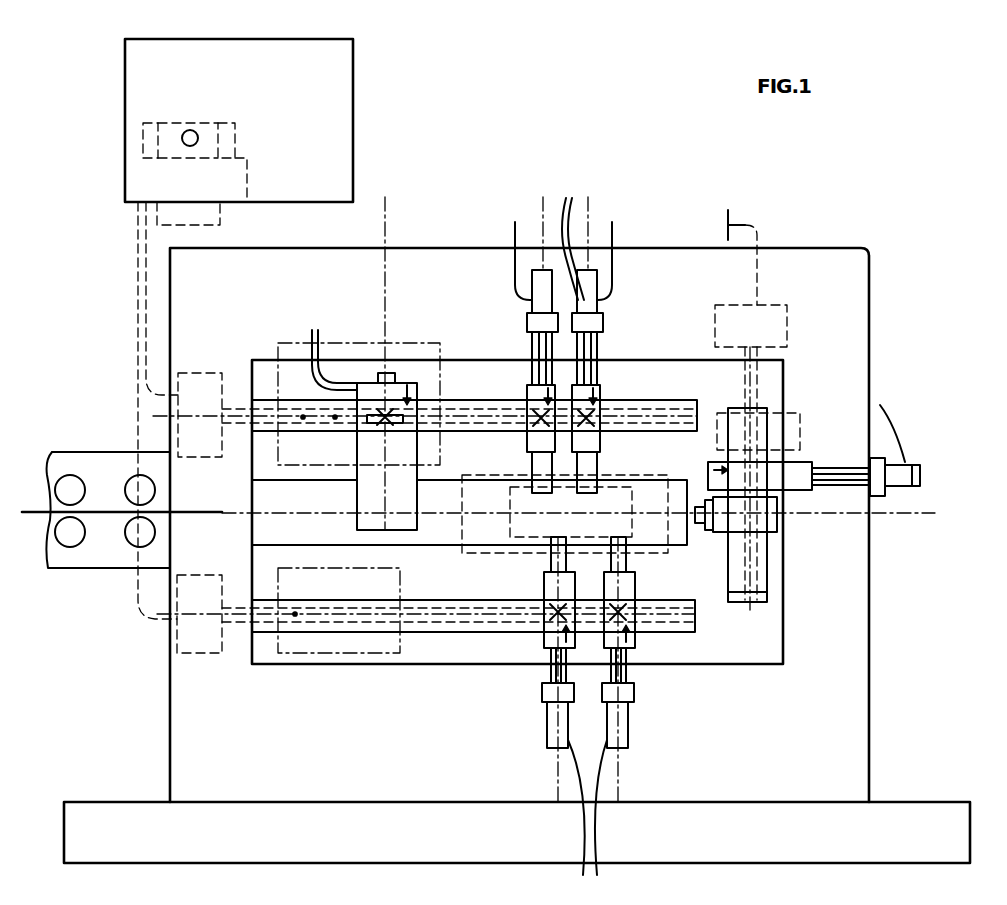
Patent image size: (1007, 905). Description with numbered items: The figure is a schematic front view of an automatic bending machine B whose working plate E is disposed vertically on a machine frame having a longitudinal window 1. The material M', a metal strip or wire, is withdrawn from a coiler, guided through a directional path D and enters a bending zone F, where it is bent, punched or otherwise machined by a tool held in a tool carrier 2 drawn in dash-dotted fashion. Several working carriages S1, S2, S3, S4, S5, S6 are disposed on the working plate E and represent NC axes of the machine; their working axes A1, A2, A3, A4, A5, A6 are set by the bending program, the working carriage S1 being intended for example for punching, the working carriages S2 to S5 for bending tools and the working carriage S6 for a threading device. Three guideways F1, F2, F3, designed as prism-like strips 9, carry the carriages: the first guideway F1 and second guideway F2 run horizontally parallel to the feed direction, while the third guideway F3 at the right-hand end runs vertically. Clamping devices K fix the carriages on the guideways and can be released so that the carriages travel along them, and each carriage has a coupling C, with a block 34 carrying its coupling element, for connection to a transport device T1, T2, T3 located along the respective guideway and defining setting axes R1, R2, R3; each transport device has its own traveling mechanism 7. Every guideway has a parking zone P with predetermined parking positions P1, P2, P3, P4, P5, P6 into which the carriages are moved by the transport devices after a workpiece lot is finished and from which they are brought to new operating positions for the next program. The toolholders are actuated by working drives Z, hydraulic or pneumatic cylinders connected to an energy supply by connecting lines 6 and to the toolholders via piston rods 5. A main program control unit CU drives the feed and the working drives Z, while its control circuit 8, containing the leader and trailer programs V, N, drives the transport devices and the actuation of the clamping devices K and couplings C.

The program control unit CU is at (355, 78).
The leader program V is at (150, 122).
The trailer program N is at (226, 122).
The control circuit 8 is at (140, 190).
The traveling mechanism 7 is at (193, 373).
The bending machine B is at (822, 247).
The working plate E is at (846, 278).
The bending zone F is at (575, 490).
The directional path D is at (80, 443).
The material M' is at (122, 578).
The working axis A6 is at (590, 519).
The longitudinal window 1 is at (252, 483).
The strips 9 is at (445, 440).
The transport device T1 is at (263, 400).
The transport device T2 is at (287, 664).
The transport device T3 is at (757, 552).
The setting axis R1 is at (190, 413).
The setting axis R2 is at (200, 655).
The setting axis R3 is at (768, 595).
The first guideway F1 is at (440, 395).
The second guideway F2 is at (400, 655).
The third guideway F3 is at (762, 578).
The working carriage S1 is at (357, 500).
The working carriage S2 is at (527, 393).
The working carriage S3 is at (577, 388).
The working carriage S4 is at (544, 640).
The working carriage S5 is at (635, 640).
The working carriage S6 is at (805, 458).
The working axis A1 is at (388, 351).
The working axis A2 is at (534, 221).
The working axis A3 is at (598, 221).
The working axis A4 is at (562, 692).
The working axis A5 is at (624, 692).
The parking zone P is at (330, 340).
The working drive Z is at (385, 392).
The parking position P1 is at (303, 419).
The parking position P2 is at (335, 419).
The parking position P3 is at (357, 417).
The parking position P4 is at (295, 612).
The parking position P5 is at (364, 589).
The parking position P6 is at (752, 440).
The tool carrier 2 is at (462, 556).
The block 34 is at (512, 505).
The piston rods 5 is at (532, 352).
The connecting lines 6 is at (515, 225).
The coupling C is at (547, 393).
The clamping devices K is at (580, 382).